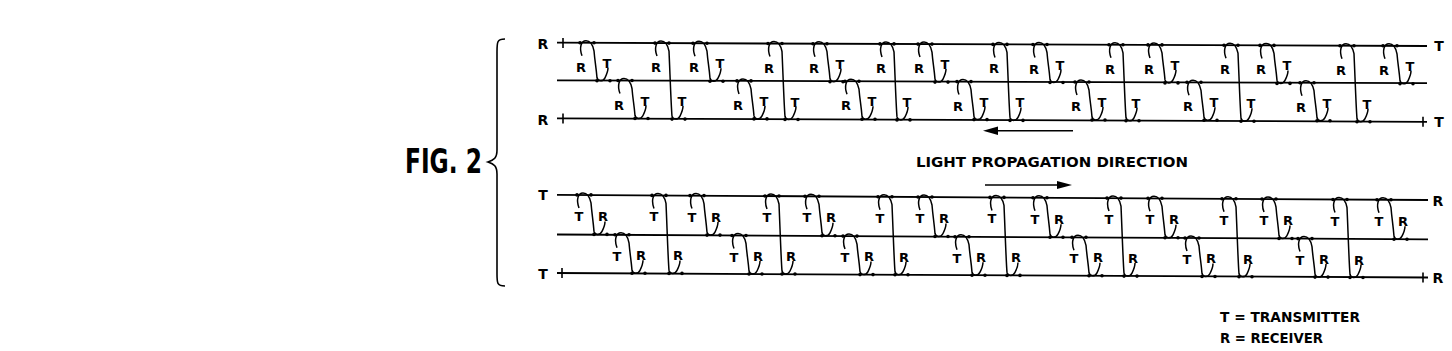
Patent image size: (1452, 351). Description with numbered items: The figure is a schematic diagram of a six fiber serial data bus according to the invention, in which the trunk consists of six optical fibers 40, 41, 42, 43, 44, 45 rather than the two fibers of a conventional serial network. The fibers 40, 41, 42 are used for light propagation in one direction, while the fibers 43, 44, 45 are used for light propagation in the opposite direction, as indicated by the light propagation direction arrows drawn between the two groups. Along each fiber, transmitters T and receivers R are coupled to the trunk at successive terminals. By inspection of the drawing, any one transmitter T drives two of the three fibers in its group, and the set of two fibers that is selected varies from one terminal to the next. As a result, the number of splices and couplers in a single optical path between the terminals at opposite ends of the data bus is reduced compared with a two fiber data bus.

The fiber 40 is at (862, 44).
The fiber 41 is at (570, 80).
The fiber 42 is at (597, 118).
The fiber 43 is at (731, 196).
The fiber 44 is at (565, 234).
The fiber 45 is at (562, 274).